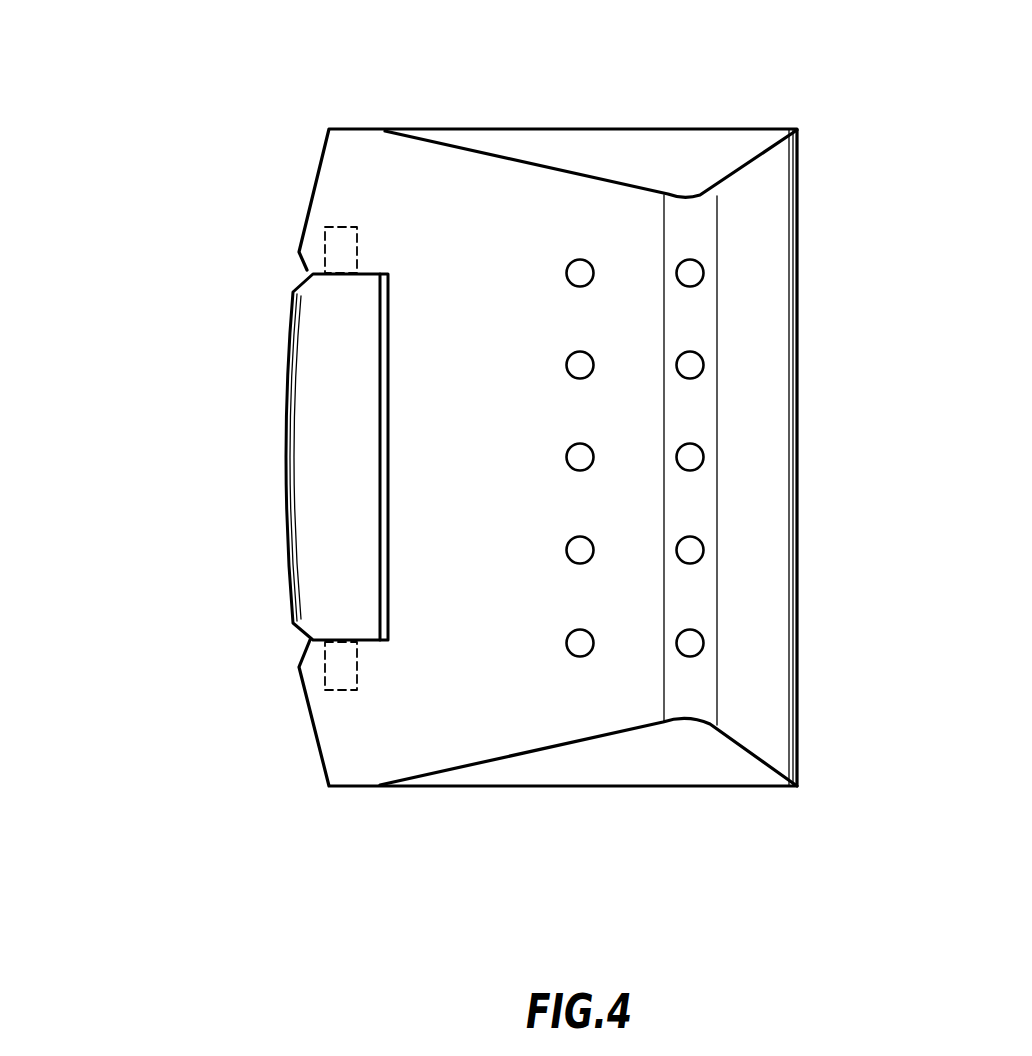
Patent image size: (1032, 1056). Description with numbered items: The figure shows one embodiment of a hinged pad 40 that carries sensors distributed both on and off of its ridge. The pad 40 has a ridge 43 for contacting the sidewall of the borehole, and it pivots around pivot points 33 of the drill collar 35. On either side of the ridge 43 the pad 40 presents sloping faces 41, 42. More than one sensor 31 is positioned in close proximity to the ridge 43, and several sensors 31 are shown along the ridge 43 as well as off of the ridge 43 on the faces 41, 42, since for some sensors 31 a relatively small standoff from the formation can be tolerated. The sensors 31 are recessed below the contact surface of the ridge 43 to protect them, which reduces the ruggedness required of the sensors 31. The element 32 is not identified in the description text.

The pad 40 is at (120, 280).
The sloping face 41 is at (423, 163).
The sloping face 42 is at (713, 147).
The ridge 43 is at (686, 207).
The sensor 31 is at (704, 275).
The rib 32 is at (713, 581).
The pivot point 33 is at (325, 240).
The drill collar 35 is at (308, 478).